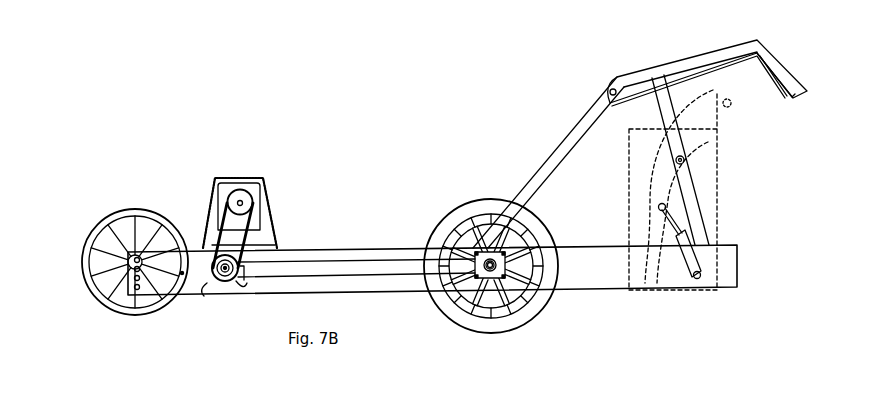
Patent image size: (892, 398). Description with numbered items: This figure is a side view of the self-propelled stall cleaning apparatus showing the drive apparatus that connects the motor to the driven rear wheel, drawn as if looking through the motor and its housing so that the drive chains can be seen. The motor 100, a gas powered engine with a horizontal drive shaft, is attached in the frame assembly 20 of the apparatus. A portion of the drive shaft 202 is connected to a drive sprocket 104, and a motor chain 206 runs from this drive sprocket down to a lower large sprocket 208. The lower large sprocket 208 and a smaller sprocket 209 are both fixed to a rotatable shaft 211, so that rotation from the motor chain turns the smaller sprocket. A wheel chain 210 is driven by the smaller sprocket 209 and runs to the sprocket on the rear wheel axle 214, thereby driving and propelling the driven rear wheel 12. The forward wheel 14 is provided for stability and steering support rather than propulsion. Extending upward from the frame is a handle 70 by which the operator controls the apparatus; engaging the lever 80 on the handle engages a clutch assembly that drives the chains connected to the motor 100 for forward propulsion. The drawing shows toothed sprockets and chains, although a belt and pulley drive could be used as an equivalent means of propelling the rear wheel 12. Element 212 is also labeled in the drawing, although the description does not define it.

The driven rear wheel 12 is at (468, 197).
The forward wheel 14 is at (108, 212).
The frame assembly 20 is at (600, 246).
The handle 70 is at (767, 47).
The lever 80 is at (777, 84).
The motor 100 is at (213, 182).
The drive sprocket 104 is at (236, 192).
The drive shaft 202 is at (241, 192).
The motor chain 206 is at (252, 224).
The lower large sprocket 208 is at (217, 243).
The smaller sprocket 209 is at (215, 282).
The wheel chain 210 is at (297, 277).
The rotatable shaft 211 is at (225, 280).
The axle 212 is at (493, 278).
The rear wheel axle 214 is at (490, 270).